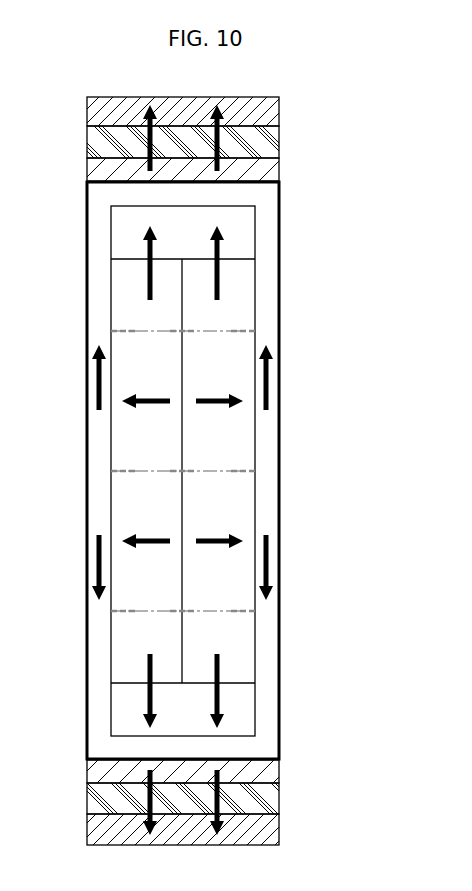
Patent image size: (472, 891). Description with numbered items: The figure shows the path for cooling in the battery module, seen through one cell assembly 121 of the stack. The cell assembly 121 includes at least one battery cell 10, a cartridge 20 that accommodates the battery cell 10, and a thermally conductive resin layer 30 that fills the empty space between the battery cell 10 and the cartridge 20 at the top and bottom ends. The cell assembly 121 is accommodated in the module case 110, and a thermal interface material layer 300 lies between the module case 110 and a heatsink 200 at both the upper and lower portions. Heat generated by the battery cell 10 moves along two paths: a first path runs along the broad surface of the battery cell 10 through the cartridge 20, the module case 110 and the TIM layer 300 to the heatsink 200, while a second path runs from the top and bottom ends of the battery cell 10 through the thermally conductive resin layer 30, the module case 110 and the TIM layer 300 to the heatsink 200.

The battery cell 10 is at (120, 495).
The cartridge 20 is at (272, 522).
The thermally conductive resin layer 30 is at (245, 237).
The module case 110 is at (270, 172).
The cell assembly 121 is at (292, 418).
The heatsink 200 is at (280, 103).
The thermal interface material layer 300 is at (273, 141).